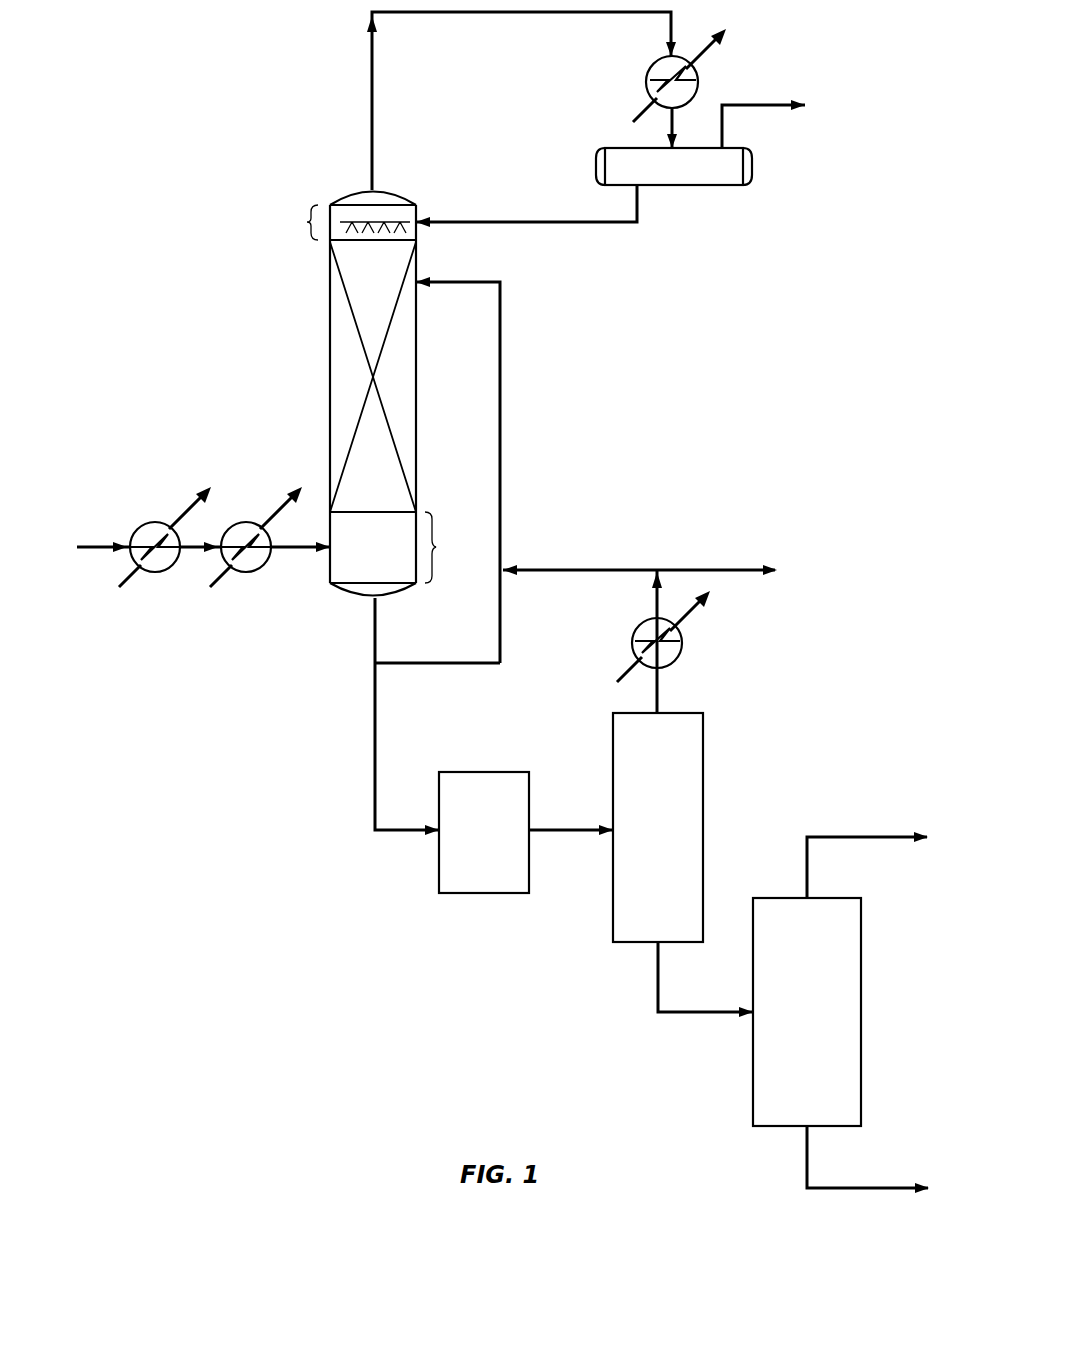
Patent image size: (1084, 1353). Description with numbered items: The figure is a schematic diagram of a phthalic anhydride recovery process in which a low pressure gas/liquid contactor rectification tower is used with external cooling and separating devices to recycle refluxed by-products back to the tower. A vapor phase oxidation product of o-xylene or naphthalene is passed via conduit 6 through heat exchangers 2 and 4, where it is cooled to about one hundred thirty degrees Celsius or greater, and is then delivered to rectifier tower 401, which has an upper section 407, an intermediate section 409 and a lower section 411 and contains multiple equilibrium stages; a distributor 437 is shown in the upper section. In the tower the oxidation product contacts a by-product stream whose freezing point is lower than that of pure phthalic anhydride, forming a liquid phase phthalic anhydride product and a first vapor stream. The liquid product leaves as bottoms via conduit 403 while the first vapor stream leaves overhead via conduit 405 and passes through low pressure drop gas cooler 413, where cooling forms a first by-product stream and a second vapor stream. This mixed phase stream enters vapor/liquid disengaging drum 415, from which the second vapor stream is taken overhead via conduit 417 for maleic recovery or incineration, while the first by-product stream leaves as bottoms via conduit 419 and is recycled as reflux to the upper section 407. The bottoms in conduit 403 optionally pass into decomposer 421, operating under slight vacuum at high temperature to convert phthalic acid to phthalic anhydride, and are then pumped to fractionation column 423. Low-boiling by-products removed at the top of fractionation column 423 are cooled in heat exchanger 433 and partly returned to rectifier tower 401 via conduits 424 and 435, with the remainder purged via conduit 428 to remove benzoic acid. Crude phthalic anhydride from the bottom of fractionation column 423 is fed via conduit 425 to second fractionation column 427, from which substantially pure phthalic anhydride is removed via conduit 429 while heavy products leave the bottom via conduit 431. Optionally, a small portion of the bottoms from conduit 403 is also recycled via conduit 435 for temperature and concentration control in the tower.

The heat exchanger 2 is at (153, 522).
The heat exchanger 4 is at (243, 522).
The conduit 6 is at (90, 547).
The rectifier tower 401 is at (330, 327).
The conduit 403 is at (375, 632).
The conduit 405 is at (372, 97).
The upper section 407 is at (343, 222).
The intermediate section 409 is at (398, 274).
The lower section 411 is at (411, 547).
The low pressure drop gas cooler 413 is at (655, 62).
The vapor/liquid disengaging drum 415 is at (621, 148).
The conduit 417 is at (747, 105).
The conduit 419 is at (460, 222).
The decomposer 421 is at (477, 772).
The fractionation column 423 is at (681, 713).
The conduit 424 is at (598, 570).
The conduit 425 is at (658, 986).
The second fractionation column 427 is at (781, 898).
The conduit 428 is at (717, 570).
The conduit 429 is at (855, 837).
The conduit 431 is at (865, 1188).
The heat exchanger 433 is at (682, 640).
The conduit 435 is at (500, 362).
The spray distributor 437 is at (408, 228).